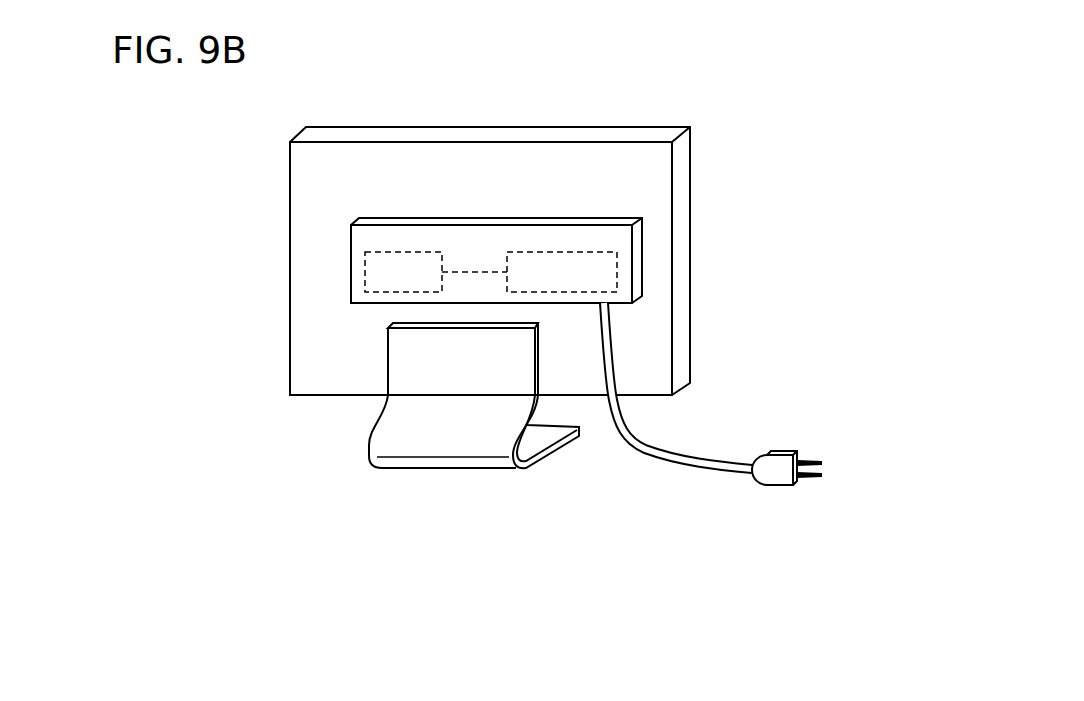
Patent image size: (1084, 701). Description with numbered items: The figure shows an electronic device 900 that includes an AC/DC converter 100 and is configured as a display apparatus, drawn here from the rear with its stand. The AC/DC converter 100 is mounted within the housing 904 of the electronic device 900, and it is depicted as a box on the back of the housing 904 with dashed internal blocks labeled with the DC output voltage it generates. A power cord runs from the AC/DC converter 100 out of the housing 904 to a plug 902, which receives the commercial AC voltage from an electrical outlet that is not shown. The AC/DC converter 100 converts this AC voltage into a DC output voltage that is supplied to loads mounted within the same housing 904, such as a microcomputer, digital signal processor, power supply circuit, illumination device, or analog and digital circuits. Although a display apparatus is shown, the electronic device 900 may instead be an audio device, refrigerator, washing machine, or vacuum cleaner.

The electronic device 900 is at (720, 146).
The housing 904 is at (553, 162).
The AC/DC converter 100 is at (600, 273).
The plug 902 is at (772, 481).